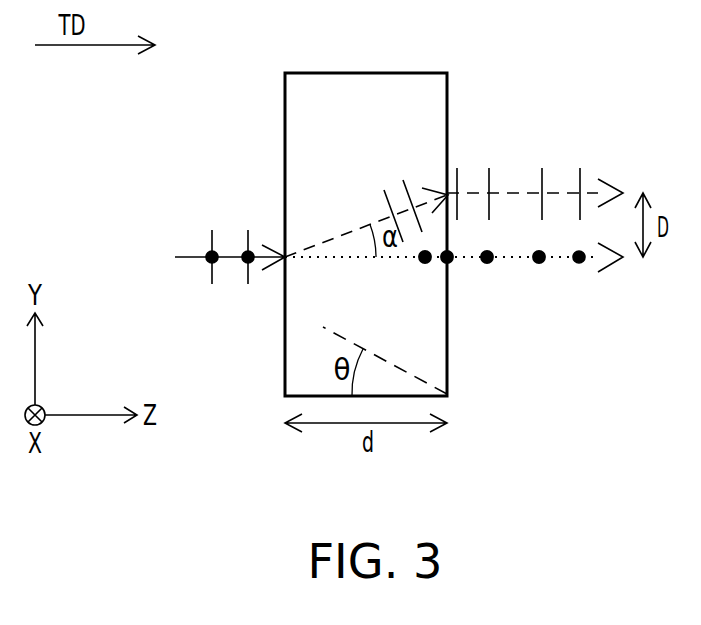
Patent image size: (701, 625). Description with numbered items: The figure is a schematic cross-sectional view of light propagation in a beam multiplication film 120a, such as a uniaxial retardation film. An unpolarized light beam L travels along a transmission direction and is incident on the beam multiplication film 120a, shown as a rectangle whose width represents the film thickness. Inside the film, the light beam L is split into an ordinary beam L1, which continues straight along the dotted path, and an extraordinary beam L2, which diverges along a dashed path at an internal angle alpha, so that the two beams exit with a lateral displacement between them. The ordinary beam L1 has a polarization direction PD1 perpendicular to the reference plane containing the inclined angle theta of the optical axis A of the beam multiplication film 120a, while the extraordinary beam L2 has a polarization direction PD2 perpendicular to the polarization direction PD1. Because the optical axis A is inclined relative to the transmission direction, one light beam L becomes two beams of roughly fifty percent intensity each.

The beam multiplication film 120a is at (315, 82).
The light beam L is at (195, 257).
The ordinary beam L1 is at (520, 259).
The extraordinary beam L2 is at (508, 192).
The polarization direction PD1 is at (578, 263).
The polarization direction PD2 is at (542, 182).
The optical axis A is at (385, 360).